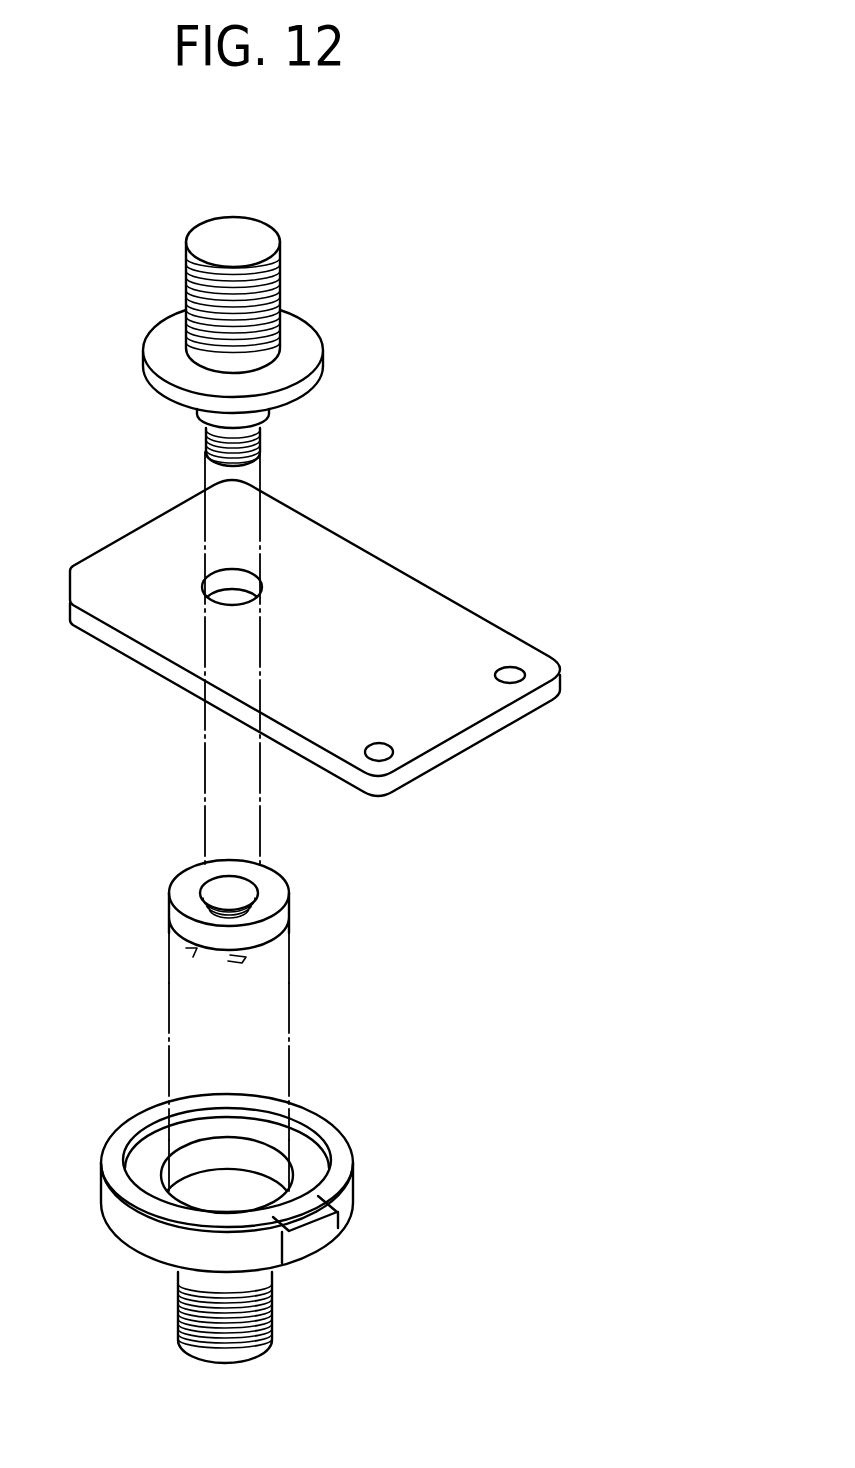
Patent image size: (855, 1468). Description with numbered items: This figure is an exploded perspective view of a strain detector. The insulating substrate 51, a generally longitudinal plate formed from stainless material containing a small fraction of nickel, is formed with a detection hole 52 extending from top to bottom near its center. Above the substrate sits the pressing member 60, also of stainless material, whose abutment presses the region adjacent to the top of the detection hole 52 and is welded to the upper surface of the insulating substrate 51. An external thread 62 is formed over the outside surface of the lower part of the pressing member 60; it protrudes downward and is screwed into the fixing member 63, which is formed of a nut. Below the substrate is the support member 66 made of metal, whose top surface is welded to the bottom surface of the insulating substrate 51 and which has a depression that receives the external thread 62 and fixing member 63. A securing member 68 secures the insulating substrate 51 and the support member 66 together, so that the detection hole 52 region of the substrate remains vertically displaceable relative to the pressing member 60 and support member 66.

The pressing member 60 is at (253, 243).
The external thread 62 is at (260, 437).
The insulating substrate 51 is at (415, 628).
The detection hole 52 is at (247, 582).
The fixing member 63 is at (288, 912).
The securing member 68 is at (330, 1134).
The support member 66 is at (272, 1302).